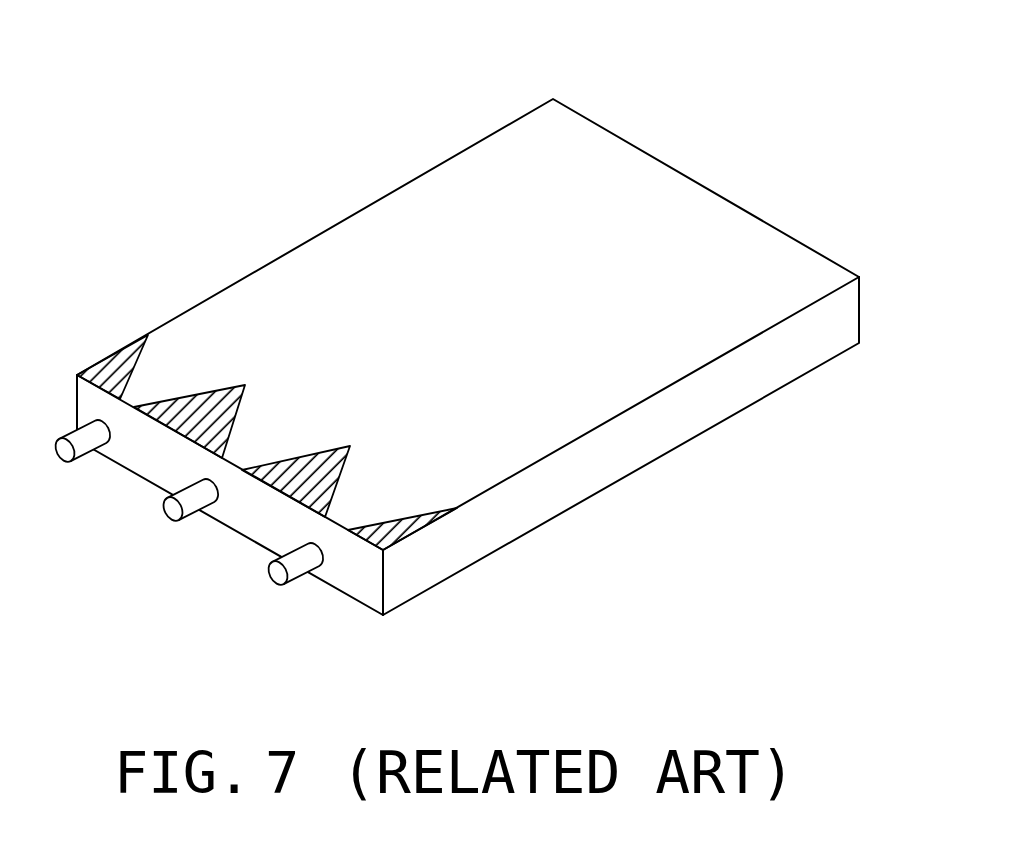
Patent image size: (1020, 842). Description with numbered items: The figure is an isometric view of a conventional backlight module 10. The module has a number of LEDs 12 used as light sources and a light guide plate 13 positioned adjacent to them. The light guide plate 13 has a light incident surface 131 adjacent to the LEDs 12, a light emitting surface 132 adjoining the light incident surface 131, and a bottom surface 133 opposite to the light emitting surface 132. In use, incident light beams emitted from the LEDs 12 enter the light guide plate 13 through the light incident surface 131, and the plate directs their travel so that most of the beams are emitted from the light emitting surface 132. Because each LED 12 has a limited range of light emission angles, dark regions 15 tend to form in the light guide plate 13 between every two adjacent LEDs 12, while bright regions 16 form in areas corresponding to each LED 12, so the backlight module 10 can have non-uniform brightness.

The backlight module 10 is at (528, 62).
The LEDs 12 is at (300, 559).
The light guide plate 13 is at (678, 160).
The light incident surface 131 is at (353, 570).
The light emitting surface 132 is at (382, 242).
The bottom surface 133 is at (733, 418).
The dark regions 15 is at (192, 395).
The bright regions 16 is at (400, 484).